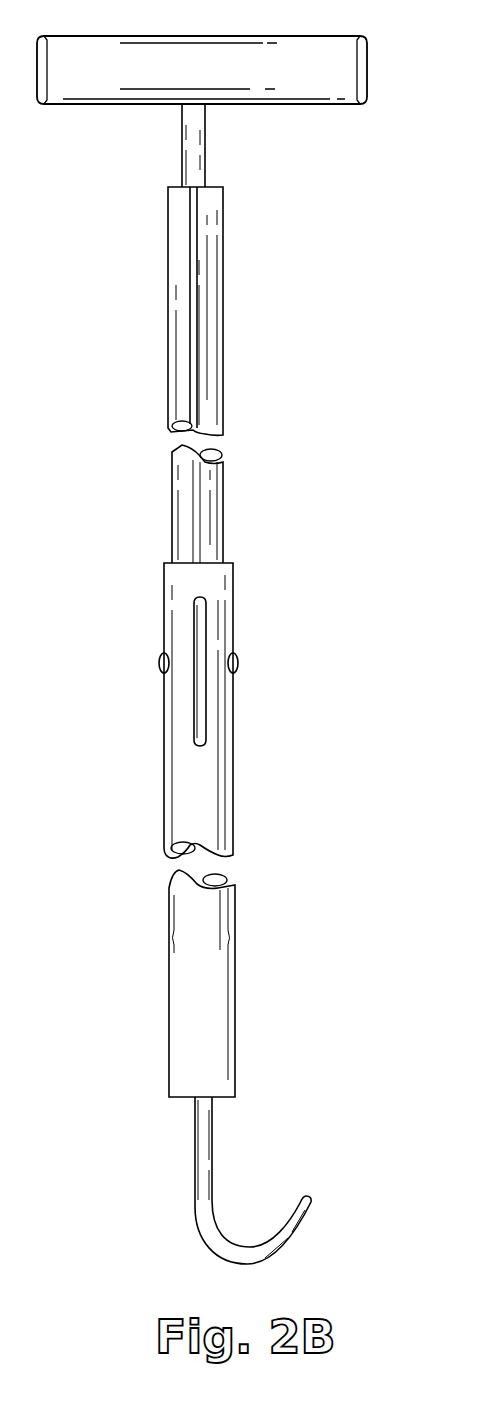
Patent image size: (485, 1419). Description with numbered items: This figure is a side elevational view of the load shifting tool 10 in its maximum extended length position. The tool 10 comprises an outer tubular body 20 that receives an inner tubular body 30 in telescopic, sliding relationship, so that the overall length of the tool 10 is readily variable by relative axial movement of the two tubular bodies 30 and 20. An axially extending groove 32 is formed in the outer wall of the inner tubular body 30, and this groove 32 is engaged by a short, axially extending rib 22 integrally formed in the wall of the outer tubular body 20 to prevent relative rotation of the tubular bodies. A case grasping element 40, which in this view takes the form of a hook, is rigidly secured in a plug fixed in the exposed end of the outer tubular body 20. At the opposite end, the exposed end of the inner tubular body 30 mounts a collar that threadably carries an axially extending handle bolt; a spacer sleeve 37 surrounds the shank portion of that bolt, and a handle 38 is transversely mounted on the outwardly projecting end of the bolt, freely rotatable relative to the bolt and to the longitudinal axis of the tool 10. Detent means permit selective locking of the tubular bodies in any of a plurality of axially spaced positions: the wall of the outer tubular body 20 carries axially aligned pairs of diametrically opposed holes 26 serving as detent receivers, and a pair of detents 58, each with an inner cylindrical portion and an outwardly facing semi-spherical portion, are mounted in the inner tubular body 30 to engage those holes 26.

The load shifting tool 10 is at (250, 578).
The outer tubular body 20 is at (233, 613).
The rib 22 is at (195, 617).
The holes 26 is at (230, 944).
The inner tubular body 30 is at (223, 363).
The groove 32 is at (197, 340).
The spacer sleeve 37 is at (207, 152).
The handle 38 is at (230, 36).
The case grasping element 40 is at (212, 1160).
The detents 58 is at (238, 663).